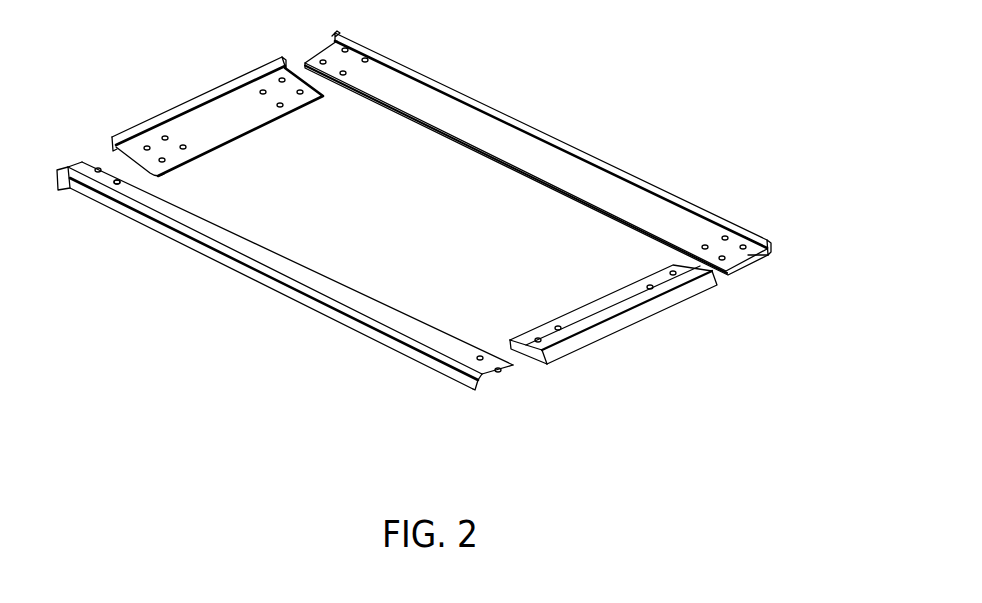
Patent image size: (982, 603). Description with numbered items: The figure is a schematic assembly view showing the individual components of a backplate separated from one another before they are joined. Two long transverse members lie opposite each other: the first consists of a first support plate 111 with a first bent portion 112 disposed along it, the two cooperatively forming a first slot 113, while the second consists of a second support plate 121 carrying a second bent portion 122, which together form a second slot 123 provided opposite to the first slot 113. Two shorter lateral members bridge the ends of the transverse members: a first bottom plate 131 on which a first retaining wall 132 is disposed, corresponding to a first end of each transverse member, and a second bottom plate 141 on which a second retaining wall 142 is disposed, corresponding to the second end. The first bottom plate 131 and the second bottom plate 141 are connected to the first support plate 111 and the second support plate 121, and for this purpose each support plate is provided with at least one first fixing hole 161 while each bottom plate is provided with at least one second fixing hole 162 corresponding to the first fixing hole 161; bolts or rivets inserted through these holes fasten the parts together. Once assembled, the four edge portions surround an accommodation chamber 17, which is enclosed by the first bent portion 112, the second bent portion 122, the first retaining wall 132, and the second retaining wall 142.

The first support plate 111 is at (500, 137).
The first bent portion 112 is at (562, 140).
The first slot 113 is at (768, 252).
The second support plate 121 is at (277, 257).
The second bent portion 122 is at (333, 307).
The second slot 123 is at (473, 387).
The first bottom plate 131 is at (202, 122).
The first retaining wall 132 is at (115, 141).
The second bottom plate 141 is at (602, 310).
The second retaining wall 142 is at (672, 293).
The first fixing hole 161 is at (117, 183).
The second fixing hole 162 is at (300, 93).
The accommodation chamber 17 is at (613, 240).